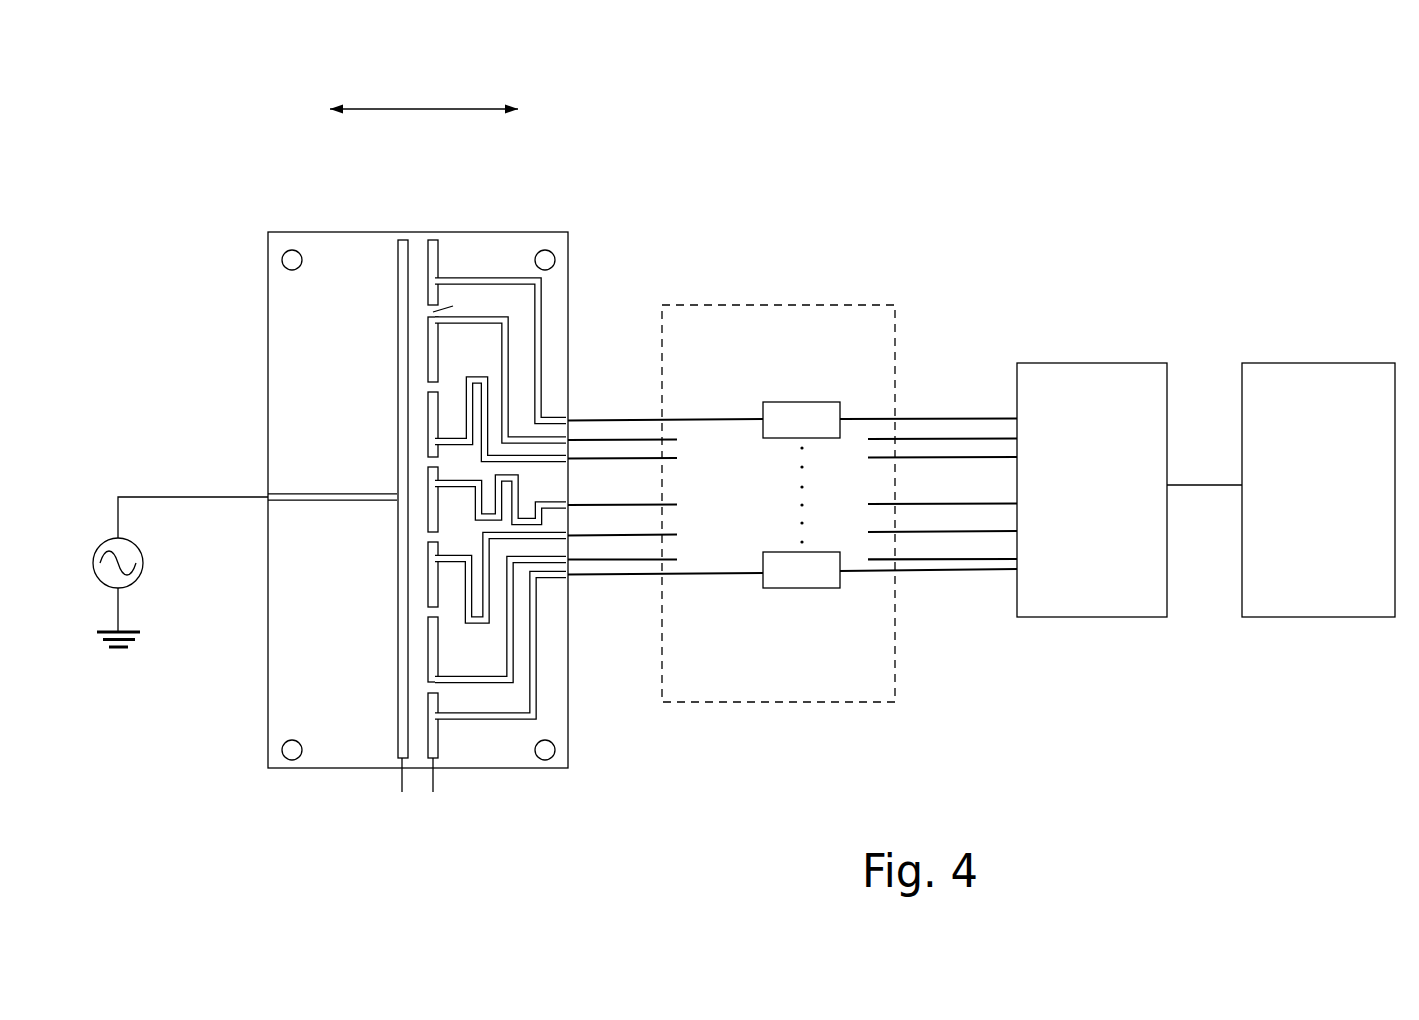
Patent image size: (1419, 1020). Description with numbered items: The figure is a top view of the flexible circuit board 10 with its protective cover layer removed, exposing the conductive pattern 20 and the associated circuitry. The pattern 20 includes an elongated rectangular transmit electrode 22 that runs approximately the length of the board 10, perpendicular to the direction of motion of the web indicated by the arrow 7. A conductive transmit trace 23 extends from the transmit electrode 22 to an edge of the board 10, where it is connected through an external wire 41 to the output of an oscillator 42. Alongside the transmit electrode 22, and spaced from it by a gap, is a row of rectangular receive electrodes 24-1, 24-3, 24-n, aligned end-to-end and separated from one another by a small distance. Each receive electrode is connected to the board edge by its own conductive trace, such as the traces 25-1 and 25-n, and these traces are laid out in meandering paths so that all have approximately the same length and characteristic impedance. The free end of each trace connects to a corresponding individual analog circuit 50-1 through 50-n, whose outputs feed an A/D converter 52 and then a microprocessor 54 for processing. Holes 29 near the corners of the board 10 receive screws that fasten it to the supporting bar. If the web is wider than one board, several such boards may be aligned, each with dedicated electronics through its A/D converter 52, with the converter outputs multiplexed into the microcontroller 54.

The arrow 7 is at (424, 90).
The flexible circuit board 10 is at (482, 514).
The pattern 20 is at (482, 502).
The transmit electrode 22 is at (402, 595).
The transmit trace 23 is at (340, 508).
The receive electrode 24-1 is at (438, 260).
The receive electrode 24-3 is at (432, 408).
The receive electrode 24-n is at (437, 732).
The conductive trace 25-1 is at (542, 307).
The conductive trace 25-n is at (540, 676).
The holes 29 is at (291, 249).
The wire 41 is at (193, 493).
The oscillator 42 is at (143, 592).
The analog circuit 50-1 is at (801, 420).
The analog circuit 50-n is at (801, 570).
The A/D converter 52 is at (1092, 490).
The microprocessor 54 is at (1318, 490).